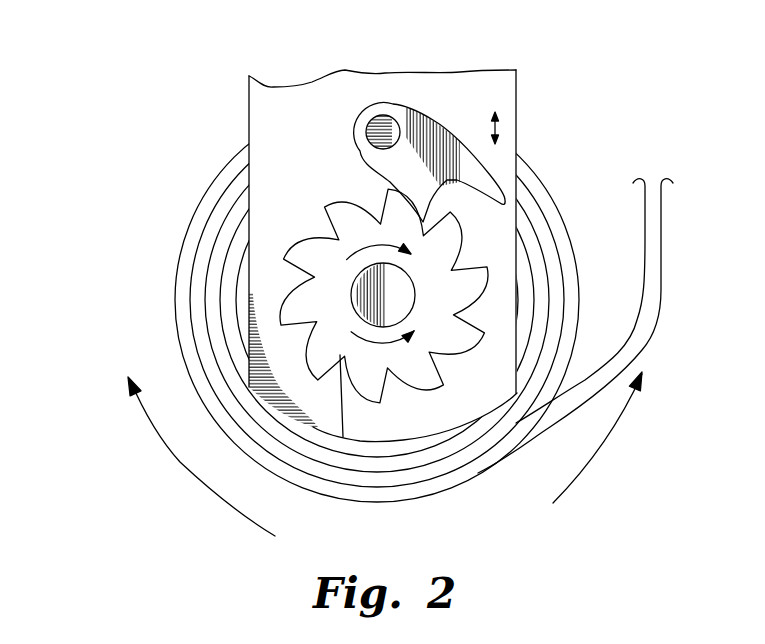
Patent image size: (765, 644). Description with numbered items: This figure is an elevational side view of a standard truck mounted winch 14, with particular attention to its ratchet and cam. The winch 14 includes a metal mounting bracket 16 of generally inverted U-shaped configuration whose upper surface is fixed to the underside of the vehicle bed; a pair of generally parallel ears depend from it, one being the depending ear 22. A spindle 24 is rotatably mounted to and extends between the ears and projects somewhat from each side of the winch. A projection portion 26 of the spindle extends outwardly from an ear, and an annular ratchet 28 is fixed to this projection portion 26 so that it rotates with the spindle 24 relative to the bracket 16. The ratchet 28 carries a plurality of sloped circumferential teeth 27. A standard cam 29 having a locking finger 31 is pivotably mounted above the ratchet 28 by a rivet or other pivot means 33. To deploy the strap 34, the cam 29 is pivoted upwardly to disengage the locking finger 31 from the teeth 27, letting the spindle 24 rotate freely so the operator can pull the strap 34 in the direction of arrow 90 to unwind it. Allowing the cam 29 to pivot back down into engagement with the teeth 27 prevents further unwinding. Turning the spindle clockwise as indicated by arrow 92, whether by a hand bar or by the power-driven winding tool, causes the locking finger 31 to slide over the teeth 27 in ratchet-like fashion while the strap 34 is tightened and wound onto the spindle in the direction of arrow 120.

The winch 14 is at (150, 212).
The mounting bracket 16 is at (498, 92).
The ear 22 is at (270, 112).
The spindle 24 is at (466, 346).
The projection portion 26 is at (353, 288).
The teeth 27 is at (343, 437).
The ratchet 28 is at (300, 296).
The cam 29 is at (440, 146).
The locking finger 31 is at (365, 170).
The pivot means 33 is at (364, 122).
The strap 34 is at (661, 292).
The arrow 90 is at (595, 458).
The arrow 92 is at (345, 240).
The direction arrow 120 is at (178, 462).